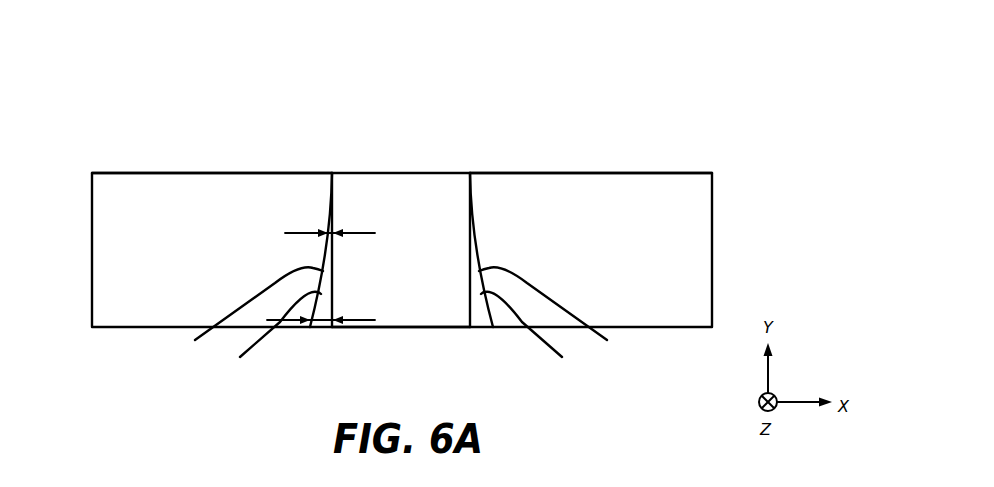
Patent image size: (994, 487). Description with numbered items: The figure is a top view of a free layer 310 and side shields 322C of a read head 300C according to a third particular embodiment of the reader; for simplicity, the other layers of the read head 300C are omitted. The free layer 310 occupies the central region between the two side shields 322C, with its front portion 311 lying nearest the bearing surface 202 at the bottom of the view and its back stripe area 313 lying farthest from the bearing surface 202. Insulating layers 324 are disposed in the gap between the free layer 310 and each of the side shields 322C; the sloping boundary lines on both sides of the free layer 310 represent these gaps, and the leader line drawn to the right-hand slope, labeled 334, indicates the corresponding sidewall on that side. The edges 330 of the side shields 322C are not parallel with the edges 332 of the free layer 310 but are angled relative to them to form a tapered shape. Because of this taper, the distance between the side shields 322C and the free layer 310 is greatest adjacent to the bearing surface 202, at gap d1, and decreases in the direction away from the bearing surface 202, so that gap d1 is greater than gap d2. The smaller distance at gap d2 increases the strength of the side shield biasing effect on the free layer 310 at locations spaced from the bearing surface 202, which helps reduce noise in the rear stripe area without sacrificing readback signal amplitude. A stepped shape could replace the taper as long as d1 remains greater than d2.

The bearing surface 202 is at (695, 328).
The free layer 310 is at (406, 187).
The back stripe area 313 is at (442, 197).
The side shields 322C is at (200, 197).
The insulating layers 324 is at (315, 317).
The right tapered sidewall 334 is at (483, 320).
The edges of the side shields 330 is at (402, 312).
The edges of the free layer 332 is at (403, 333).
The front portion 311 is at (415, 303).
The read head 300C is at (688, 56).
The gap d1 is at (358, 321).
The gap d2 is at (304, 233).